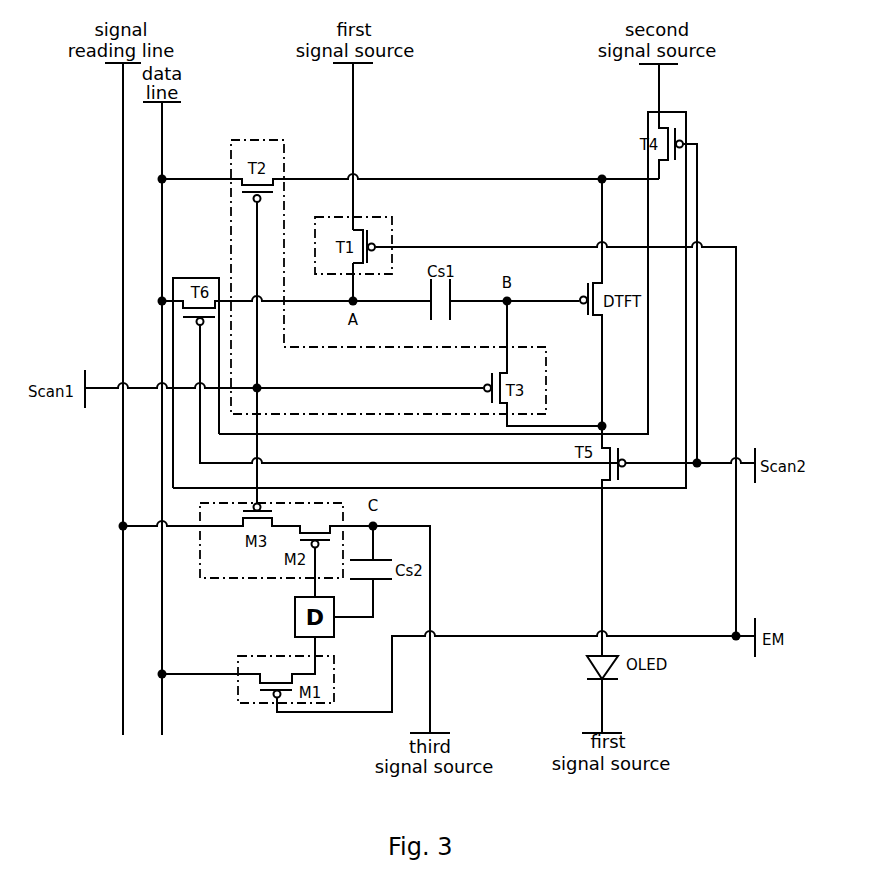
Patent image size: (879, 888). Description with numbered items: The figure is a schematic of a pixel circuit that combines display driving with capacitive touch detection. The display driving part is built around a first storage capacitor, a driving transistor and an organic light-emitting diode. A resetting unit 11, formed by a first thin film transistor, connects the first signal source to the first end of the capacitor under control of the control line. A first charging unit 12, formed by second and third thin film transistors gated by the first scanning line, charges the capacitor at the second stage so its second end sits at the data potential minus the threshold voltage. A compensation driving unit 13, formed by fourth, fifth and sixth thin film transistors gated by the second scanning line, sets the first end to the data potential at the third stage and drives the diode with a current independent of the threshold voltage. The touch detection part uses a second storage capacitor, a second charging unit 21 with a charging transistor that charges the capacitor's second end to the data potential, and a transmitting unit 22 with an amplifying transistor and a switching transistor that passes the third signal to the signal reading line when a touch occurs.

The resetting unit 11 is at (371, 217).
The first charging unit 12 is at (258, 140).
The compensation driving unit 13 is at (178, 278).
The second charging unit 21 is at (240, 656).
The transmitting unit 22 is at (238, 579).